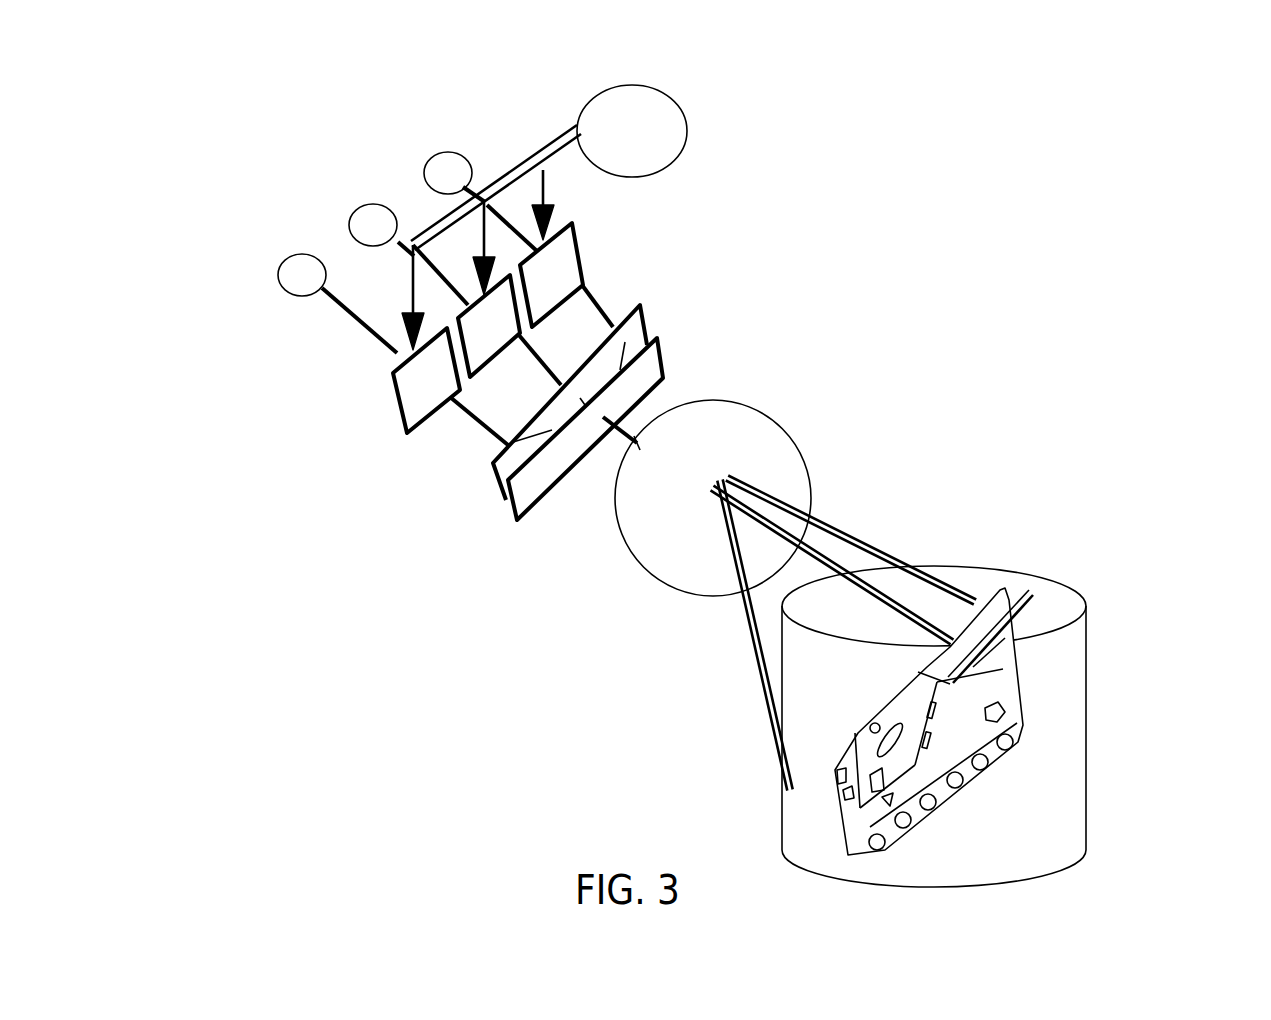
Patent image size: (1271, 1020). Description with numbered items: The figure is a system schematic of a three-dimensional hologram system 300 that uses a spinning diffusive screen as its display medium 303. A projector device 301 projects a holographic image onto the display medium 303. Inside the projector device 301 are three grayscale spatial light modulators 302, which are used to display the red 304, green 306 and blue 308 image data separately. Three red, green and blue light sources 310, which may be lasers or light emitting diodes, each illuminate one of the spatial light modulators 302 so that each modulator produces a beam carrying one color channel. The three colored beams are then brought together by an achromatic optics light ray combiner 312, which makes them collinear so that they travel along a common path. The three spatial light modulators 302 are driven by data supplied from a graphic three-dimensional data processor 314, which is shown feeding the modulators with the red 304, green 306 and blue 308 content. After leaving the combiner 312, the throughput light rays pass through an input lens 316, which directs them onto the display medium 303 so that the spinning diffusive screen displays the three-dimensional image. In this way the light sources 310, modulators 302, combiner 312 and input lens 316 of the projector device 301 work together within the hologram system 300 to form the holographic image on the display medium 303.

The 3D hologram system 300 is at (1001, 165).
The projector device 301 is at (142, 372).
The grayscale spatial light modulators 302 is at (397, 400).
The display medium 303 is at (1088, 673).
The red data 304 is at (543, 183).
The green data 306 is at (485, 237).
The blue data 308 is at (412, 284).
The red, green and blue light sources 310 is at (435, 160).
The achromatic optics light ray combiner 312 is at (507, 500).
The graphic 3D data processor 314 is at (675, 100).
The input lens 316 is at (778, 420).